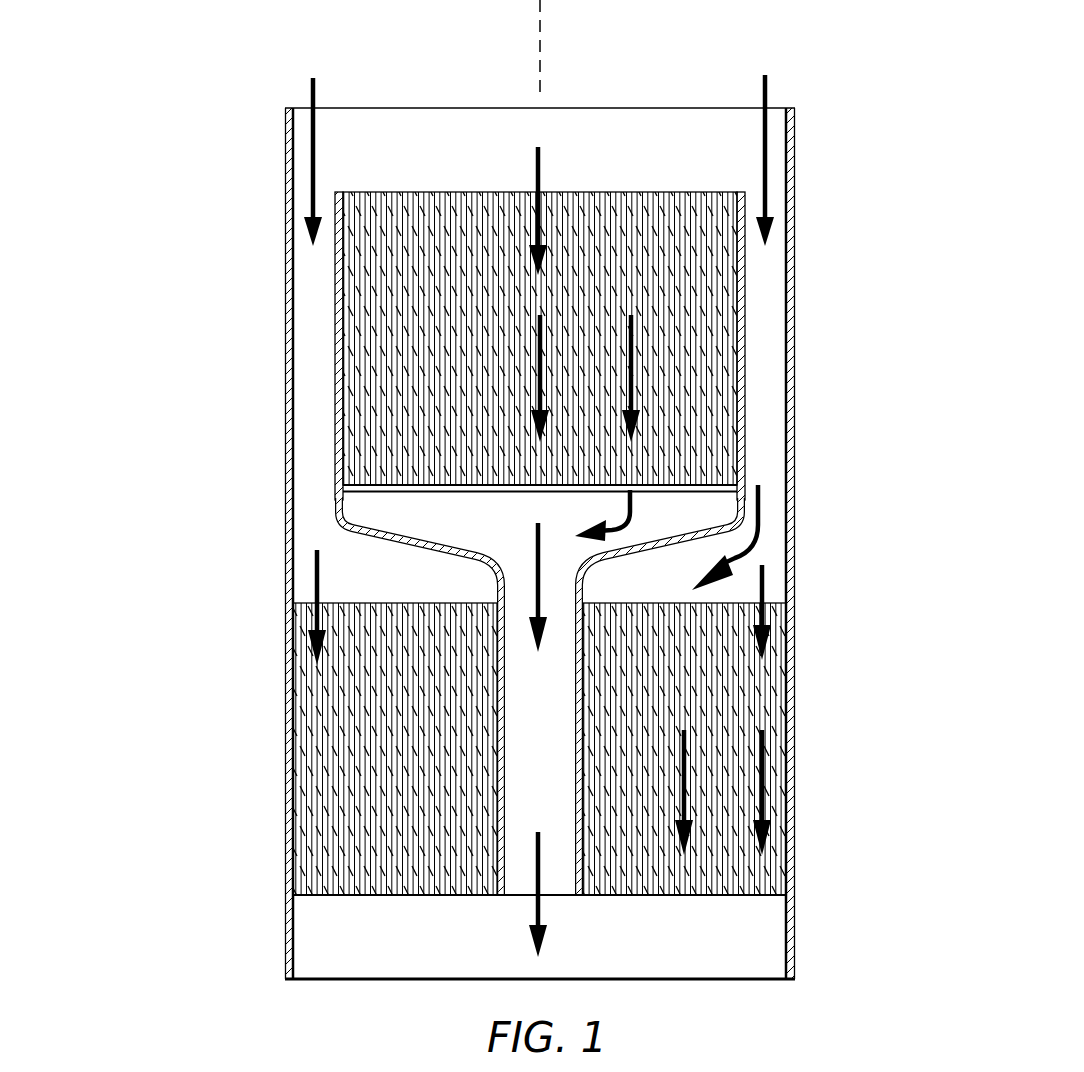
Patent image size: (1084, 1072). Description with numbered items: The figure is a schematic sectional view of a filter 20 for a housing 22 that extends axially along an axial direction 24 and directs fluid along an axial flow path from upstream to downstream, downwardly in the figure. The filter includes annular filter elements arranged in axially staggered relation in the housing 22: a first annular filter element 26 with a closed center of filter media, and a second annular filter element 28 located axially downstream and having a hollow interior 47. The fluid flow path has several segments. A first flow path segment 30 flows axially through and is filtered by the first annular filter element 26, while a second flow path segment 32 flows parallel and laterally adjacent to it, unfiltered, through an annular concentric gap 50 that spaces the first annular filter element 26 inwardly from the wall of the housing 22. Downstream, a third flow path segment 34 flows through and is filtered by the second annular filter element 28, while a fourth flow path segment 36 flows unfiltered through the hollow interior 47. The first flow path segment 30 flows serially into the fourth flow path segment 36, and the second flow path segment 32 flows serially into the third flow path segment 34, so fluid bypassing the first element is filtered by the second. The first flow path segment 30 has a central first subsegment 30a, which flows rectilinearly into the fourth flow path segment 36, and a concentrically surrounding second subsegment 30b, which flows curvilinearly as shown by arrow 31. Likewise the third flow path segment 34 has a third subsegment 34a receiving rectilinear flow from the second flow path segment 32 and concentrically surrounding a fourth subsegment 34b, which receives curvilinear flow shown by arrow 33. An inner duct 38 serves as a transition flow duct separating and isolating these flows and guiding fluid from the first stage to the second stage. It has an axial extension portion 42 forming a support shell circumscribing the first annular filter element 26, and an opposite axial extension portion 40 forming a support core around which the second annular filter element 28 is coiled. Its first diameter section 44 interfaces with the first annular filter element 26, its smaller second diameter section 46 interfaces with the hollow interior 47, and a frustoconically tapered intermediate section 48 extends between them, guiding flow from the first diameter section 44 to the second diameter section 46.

The filter 20 is at (200, 135).
The housing 22 is at (286, 470).
The axial direction 24 is at (540, 45).
The first annular filter element 26 is at (357, 330).
The second annular filter element 28 is at (305, 780).
The first flow path segment 30 is at (541, 170).
The first subsegment 30a is at (537, 393).
The second subsegment 30b is at (634, 392).
The arrow 31 is at (627, 506).
The second flow path segment 32 is at (311, 96).
The arrow 33 is at (702, 570).
The third flow path segment 34 is at (320, 582).
The third subsegment 34a is at (766, 760).
The fourth subsegment 34b is at (681, 788).
The fourth flow path segment 36 is at (547, 552).
The inner duct 38 is at (648, 530).
The axial extension portion 40 is at (500, 725).
The axial extension portion 42 is at (338, 368).
The first diameter section 44 is at (360, 500).
The second diameter section 46 is at (506, 562).
The hollow interior 47 is at (519, 632).
The intermediate section 48 is at (400, 532).
The annular concentric gap 50 is at (760, 345).